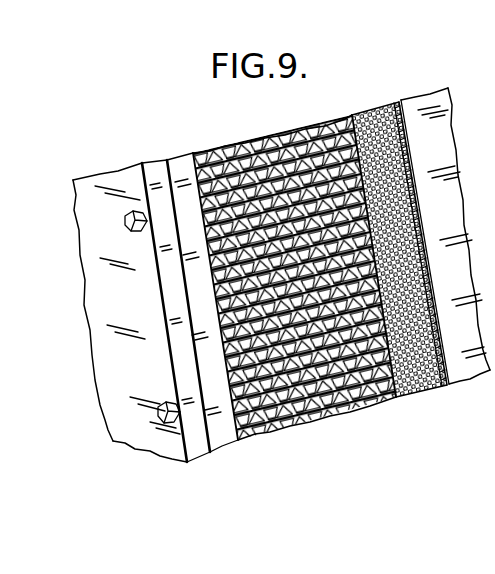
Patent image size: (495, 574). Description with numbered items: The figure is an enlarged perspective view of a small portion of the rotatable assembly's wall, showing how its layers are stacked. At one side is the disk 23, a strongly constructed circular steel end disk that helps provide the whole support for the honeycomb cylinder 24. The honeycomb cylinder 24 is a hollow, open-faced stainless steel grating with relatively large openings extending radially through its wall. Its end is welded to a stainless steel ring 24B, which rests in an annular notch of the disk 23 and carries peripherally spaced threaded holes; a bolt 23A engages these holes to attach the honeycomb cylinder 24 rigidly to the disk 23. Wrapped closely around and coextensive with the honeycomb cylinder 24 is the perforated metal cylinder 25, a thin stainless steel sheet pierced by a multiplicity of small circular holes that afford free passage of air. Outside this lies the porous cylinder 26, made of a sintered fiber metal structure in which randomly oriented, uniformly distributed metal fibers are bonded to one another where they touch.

The disk 23 is at (153, 445).
The bolt 23A is at (158, 412).
The honeycomb cylinder 24 is at (327, 412).
The stainless steel ring 24B is at (228, 442).
The perforated metal cylinder 25 is at (425, 391).
The porous cylinder 26 is at (427, 98).